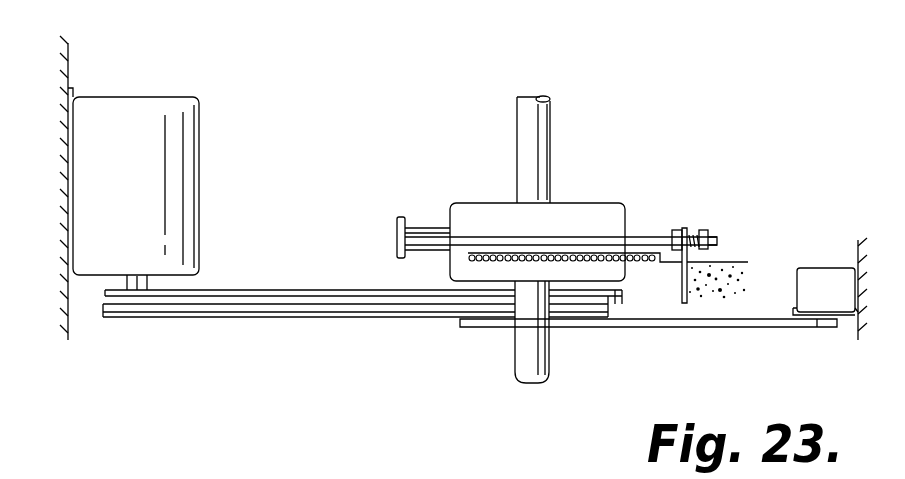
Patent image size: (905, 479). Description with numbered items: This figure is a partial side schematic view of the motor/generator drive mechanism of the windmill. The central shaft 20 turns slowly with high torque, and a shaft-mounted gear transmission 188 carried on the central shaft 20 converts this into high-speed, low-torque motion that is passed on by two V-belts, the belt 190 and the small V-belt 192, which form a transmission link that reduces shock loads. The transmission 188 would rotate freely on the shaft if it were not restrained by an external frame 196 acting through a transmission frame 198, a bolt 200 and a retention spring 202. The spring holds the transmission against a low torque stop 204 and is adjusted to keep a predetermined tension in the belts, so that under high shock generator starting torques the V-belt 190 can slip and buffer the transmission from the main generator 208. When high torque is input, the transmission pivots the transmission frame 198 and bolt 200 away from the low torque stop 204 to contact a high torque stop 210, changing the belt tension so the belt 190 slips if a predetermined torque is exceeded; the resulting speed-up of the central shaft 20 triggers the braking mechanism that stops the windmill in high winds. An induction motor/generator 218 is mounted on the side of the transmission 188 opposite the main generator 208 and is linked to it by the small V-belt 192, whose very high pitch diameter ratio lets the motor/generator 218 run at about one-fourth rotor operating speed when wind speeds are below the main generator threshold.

The central shaft 20 is at (545, 133).
The shaft-mounted gear transmission 188 is at (574, 215).
The V-belt 190 is at (292, 258).
The small V-belt 192 is at (672, 324).
The external frame 196 is at (684, 227).
The transmission frame 198 is at (400, 218).
The bolt 200 is at (487, 232).
The retention spring 202 is at (472, 260).
The low torque stop 204 is at (672, 229).
The main generator 208 is at (158, 200).
The high torque stop 210 is at (708, 229).
The induction motor/generator 218 is at (817, 280).